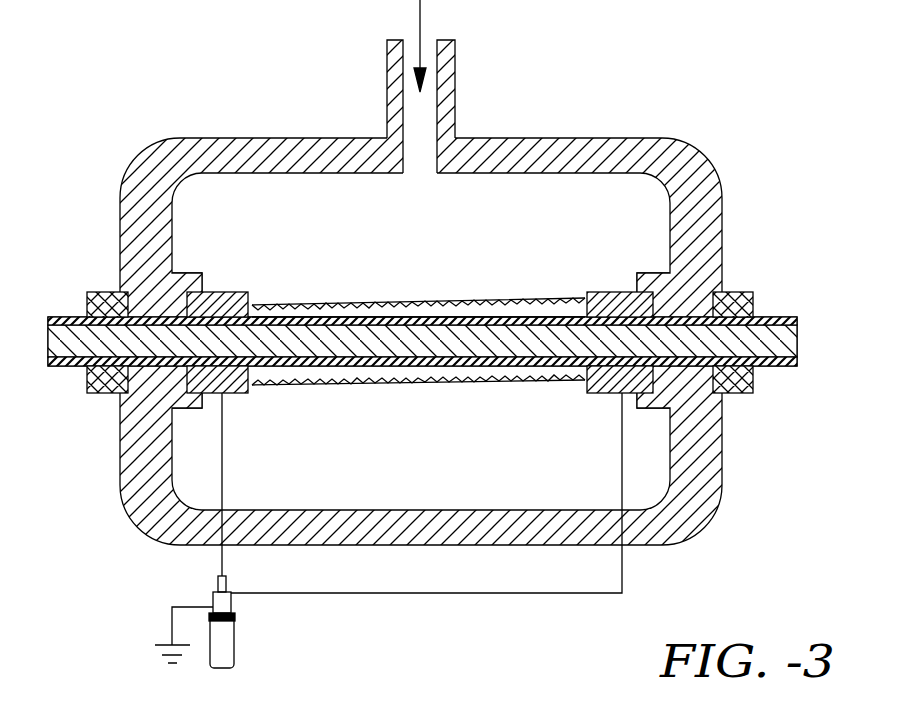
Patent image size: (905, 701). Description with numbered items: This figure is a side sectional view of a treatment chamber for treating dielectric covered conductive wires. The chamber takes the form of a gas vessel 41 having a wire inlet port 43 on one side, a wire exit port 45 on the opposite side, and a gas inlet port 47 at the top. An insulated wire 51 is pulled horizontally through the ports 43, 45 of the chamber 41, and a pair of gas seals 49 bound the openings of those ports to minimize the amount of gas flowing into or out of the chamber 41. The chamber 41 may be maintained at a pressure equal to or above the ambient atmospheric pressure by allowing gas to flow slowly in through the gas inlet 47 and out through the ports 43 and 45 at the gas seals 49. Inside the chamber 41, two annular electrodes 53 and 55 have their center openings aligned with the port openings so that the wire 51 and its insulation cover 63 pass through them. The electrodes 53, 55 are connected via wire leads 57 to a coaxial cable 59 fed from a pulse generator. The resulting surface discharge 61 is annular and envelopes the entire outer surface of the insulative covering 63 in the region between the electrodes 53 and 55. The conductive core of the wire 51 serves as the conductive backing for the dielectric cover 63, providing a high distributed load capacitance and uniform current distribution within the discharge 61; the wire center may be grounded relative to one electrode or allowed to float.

The gas vessel 41 is at (433, 233).
The wire inlet port 43 is at (161, 309).
The wire exit port 45 is at (685, 292).
The gas inlet port 47 is at (452, 97).
The gas seals 49 is at (88, 362).
The insulated wire 51 is at (48, 341).
The electrode 53 is at (252, 371).
The electrode 55 is at (590, 297).
The wire leads 57 is at (222, 456).
The coaxial cable 59 is at (226, 637).
The surface discharge 61 is at (450, 300).
The dielectric surface 63 is at (343, 317).